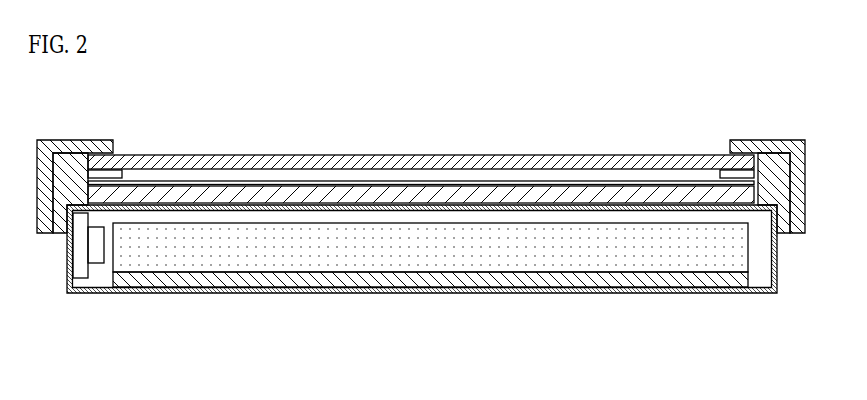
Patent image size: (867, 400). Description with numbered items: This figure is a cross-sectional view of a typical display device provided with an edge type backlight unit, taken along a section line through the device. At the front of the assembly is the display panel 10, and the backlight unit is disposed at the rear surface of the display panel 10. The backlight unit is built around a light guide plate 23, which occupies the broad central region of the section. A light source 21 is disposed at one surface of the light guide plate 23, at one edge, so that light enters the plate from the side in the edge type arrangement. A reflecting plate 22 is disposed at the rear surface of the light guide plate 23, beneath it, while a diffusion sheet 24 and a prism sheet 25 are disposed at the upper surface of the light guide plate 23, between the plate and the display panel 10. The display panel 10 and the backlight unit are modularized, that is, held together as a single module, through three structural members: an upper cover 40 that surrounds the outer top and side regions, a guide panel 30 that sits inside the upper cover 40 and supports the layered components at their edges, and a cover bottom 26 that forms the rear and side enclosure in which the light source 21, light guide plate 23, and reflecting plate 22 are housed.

The display panel 10 is at (545, 160).
The light source 21 is at (80, 250).
The reflecting plate 22 is at (375, 276).
The light guide plate 23 is at (193, 252).
The diffusion sheet 24 is at (639, 187).
The prism sheet 25 is at (686, 184).
The cover bottom 26 is at (487, 293).
The guide panel 30 is at (776, 170).
The upper cover 40 is at (799, 150).